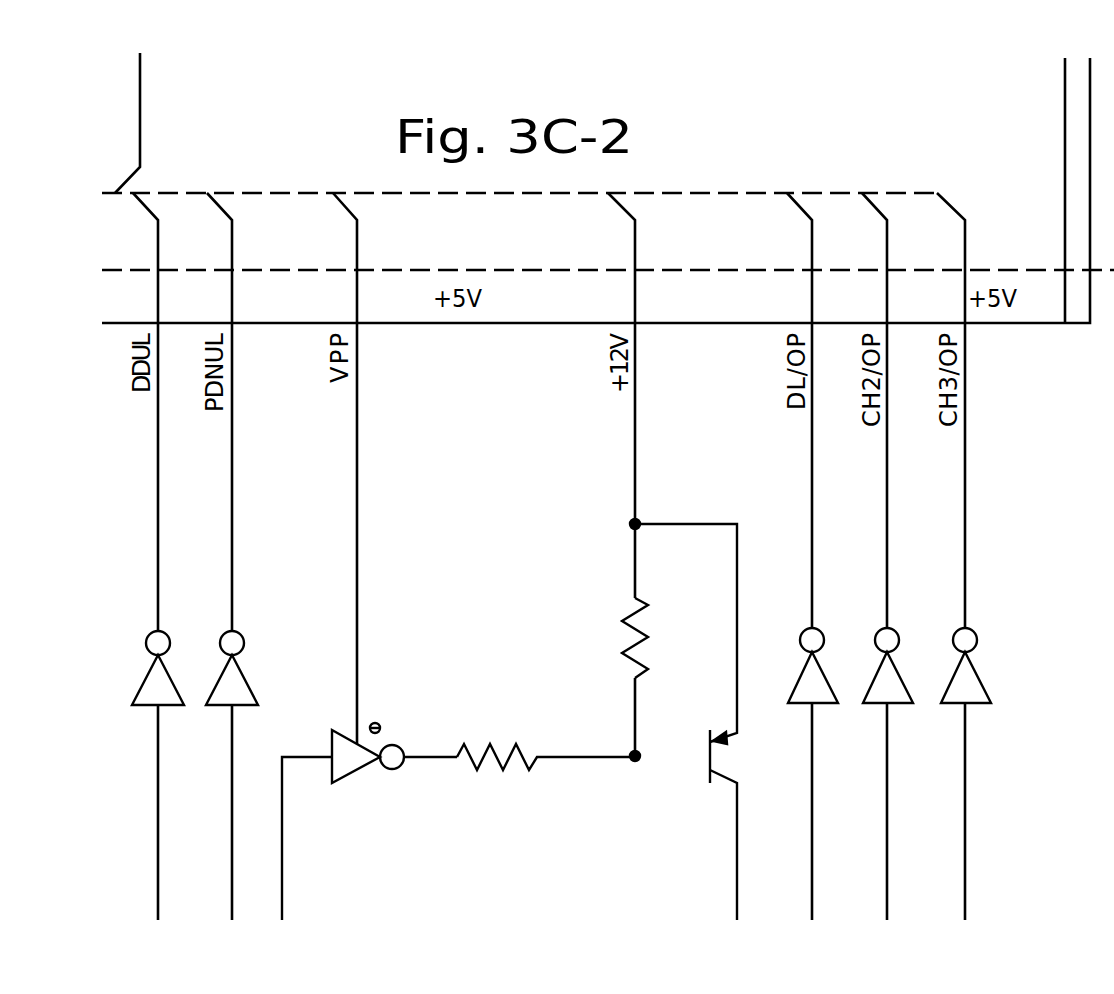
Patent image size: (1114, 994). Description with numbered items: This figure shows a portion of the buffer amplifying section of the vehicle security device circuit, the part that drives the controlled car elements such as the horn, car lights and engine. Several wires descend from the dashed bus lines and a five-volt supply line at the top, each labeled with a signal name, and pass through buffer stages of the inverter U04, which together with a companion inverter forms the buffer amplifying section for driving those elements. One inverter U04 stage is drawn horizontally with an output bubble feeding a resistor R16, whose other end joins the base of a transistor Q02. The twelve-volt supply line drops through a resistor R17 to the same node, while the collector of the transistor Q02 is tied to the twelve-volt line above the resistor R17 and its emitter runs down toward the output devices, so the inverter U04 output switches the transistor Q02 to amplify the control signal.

The inverter U04 is at (285, 775).
The resistor R16 is at (546, 743).
The resistor R17 is at (619, 638).
The PNP transistor Q02 is at (711, 719).